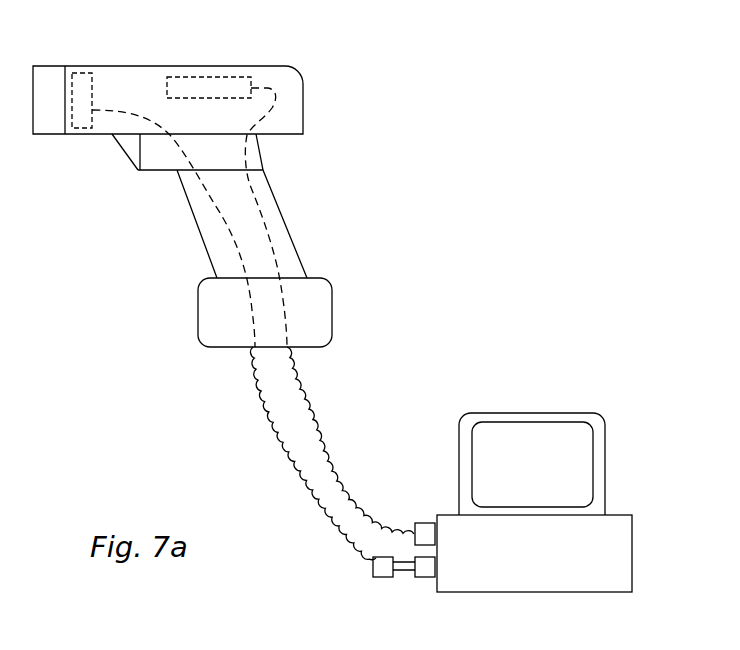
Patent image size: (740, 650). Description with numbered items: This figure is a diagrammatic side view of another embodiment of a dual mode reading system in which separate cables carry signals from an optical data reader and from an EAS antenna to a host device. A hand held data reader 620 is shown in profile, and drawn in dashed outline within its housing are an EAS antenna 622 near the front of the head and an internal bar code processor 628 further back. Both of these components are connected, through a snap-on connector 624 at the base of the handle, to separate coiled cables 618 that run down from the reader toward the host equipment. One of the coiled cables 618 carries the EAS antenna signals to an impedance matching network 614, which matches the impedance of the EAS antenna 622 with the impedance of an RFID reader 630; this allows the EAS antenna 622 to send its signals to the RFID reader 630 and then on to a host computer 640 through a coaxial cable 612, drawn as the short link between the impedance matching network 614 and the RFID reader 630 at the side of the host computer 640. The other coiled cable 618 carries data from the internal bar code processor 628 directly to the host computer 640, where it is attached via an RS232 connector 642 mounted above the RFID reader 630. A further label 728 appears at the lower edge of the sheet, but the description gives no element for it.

The hand held data reader 620 is at (302, 73).
The EAS antenna 622 is at (83, 65).
The internal bar code processor 628 is at (202, 75).
The snap-on connector 624 is at (332, 292).
The coiled cables 618 is at (317, 420).
The RS232 connector 642 is at (420, 523).
The impedance matching network 614 is at (378, 578).
The coaxial cable 612 is at (401, 578).
The RFID reader 630 is at (425, 578).
The host computer 640 is at (633, 533).
The reference label 728 is at (100, 643).